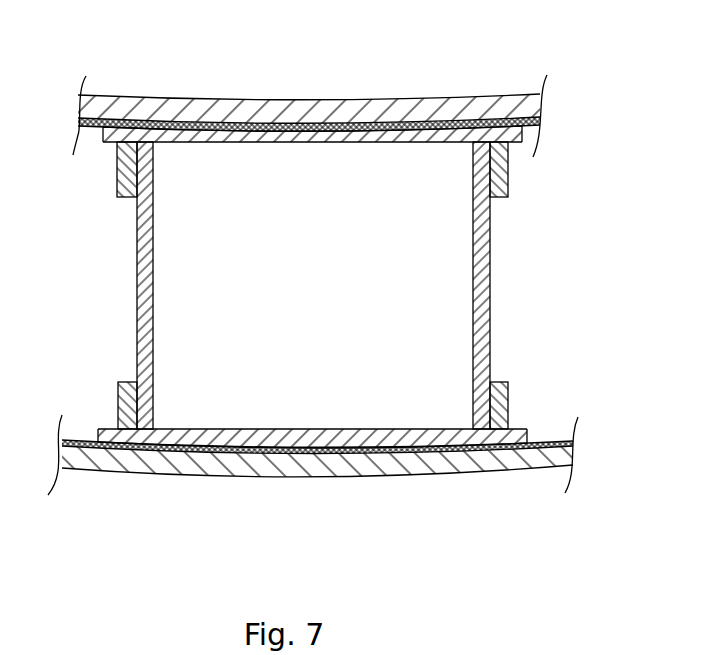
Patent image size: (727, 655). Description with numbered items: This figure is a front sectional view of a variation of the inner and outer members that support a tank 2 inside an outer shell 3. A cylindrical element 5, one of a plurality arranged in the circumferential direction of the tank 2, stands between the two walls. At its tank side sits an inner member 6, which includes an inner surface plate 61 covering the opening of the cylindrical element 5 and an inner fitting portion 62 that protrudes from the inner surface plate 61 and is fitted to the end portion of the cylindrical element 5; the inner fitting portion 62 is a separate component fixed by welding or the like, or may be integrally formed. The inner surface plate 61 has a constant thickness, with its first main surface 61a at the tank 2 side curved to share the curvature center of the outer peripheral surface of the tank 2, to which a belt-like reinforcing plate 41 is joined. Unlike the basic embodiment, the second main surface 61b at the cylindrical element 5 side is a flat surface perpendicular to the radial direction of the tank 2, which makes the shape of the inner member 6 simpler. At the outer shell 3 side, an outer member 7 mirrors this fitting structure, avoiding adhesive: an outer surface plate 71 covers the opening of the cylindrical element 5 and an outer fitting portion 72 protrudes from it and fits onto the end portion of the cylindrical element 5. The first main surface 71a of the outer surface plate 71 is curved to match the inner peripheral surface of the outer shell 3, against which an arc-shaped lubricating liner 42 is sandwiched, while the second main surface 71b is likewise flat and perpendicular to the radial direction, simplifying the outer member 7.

The tank 2 is at (115, 110).
The outer shell 3 is at (90, 458).
The reinforcing plate 41 is at (142, 126).
The lubricating liner 42 is at (83, 440).
The cylindrical element 5 is at (422, 295).
The inner member 6 is at (320, 102).
The inner surface plate 61 is at (452, 132).
The first main surface 61a is at (335, 126).
The second main surface 61b is at (264, 142).
The inner fitting portion 62 is at (505, 180).
The outer member 7 is at (323, 492).
The outer surface plate 71 is at (438, 438).
The first main surface 71a is at (242, 453).
The second main surface 71b is at (270, 427).
The outer fitting portion 72 is at (500, 398).